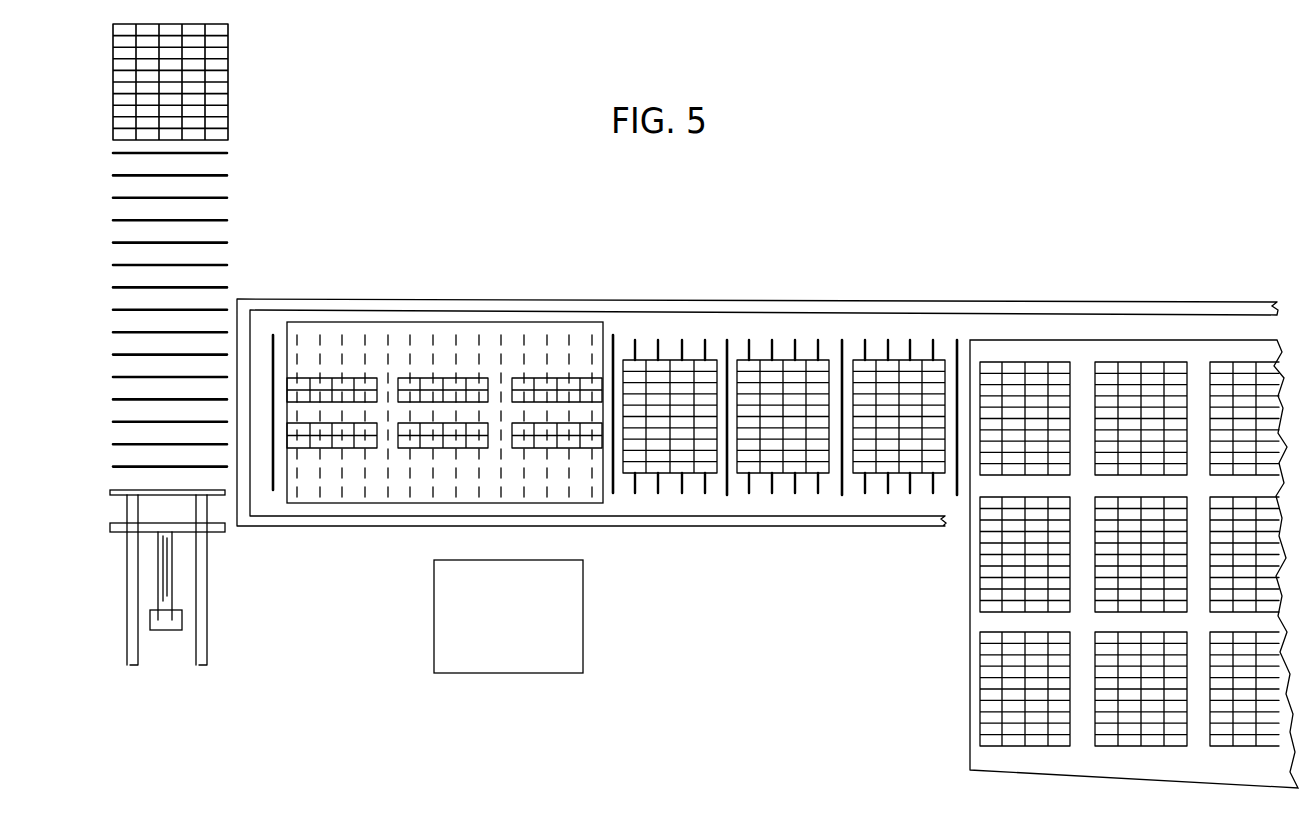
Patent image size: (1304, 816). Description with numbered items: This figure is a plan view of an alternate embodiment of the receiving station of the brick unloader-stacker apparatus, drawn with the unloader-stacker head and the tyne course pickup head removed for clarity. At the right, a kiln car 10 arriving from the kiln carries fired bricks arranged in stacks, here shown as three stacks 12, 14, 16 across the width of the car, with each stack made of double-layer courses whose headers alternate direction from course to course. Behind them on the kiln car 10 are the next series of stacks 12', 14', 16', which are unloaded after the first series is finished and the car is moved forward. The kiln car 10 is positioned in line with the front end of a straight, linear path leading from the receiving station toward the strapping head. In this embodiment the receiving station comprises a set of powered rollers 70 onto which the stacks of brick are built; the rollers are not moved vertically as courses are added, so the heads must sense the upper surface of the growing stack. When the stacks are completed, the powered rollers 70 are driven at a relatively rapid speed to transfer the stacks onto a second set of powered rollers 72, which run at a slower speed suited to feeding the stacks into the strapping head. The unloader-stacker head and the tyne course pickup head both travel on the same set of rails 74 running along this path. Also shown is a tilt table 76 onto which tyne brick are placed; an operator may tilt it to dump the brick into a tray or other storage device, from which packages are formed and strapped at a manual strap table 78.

The kiln car 10 is at (1104, 552).
The stack 12 is at (1025, 531).
The stack 12' is at (1025, 544).
The stack 14 is at (1141, 531).
The stack 14' is at (1141, 544).
The stack 16 is at (1244, 531).
The stack 16' is at (1244, 544).
The powered rollers 70 is at (865, 493).
The second set of powered rollers 72 is at (442, 444).
The rails 74 is at (757, 309).
The tilt table 76 is at (466, 361).
The manual strap table 78 is at (560, 615).